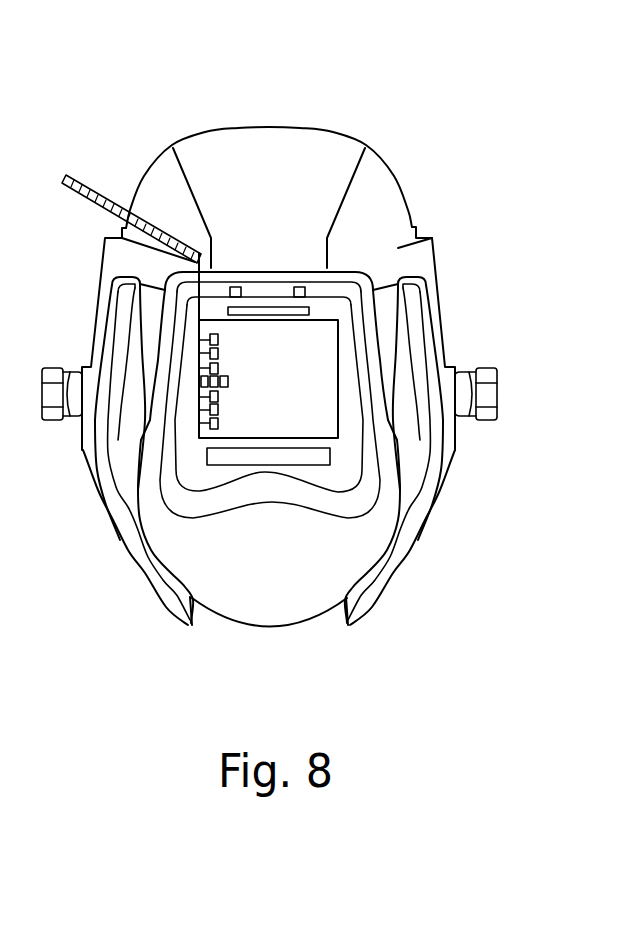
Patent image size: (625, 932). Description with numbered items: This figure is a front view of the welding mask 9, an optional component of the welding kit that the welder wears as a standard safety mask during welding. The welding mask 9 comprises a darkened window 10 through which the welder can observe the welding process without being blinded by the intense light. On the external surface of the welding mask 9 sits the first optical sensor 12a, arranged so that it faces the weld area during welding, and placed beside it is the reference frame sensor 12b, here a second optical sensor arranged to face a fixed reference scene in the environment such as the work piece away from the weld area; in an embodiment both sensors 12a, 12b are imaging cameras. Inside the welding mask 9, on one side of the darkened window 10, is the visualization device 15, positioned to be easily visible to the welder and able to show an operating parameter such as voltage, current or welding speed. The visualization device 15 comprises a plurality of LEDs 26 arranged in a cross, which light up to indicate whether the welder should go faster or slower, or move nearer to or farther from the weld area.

The welding mask 9 is at (107, 88).
The darkened window 10 is at (340, 362).
The first optical sensor 12a is at (299, 287).
The reference frame sensor 12b is at (236, 286).
The LEDs 26 is at (219, 337).
The visualization device 15 is at (222, 416).